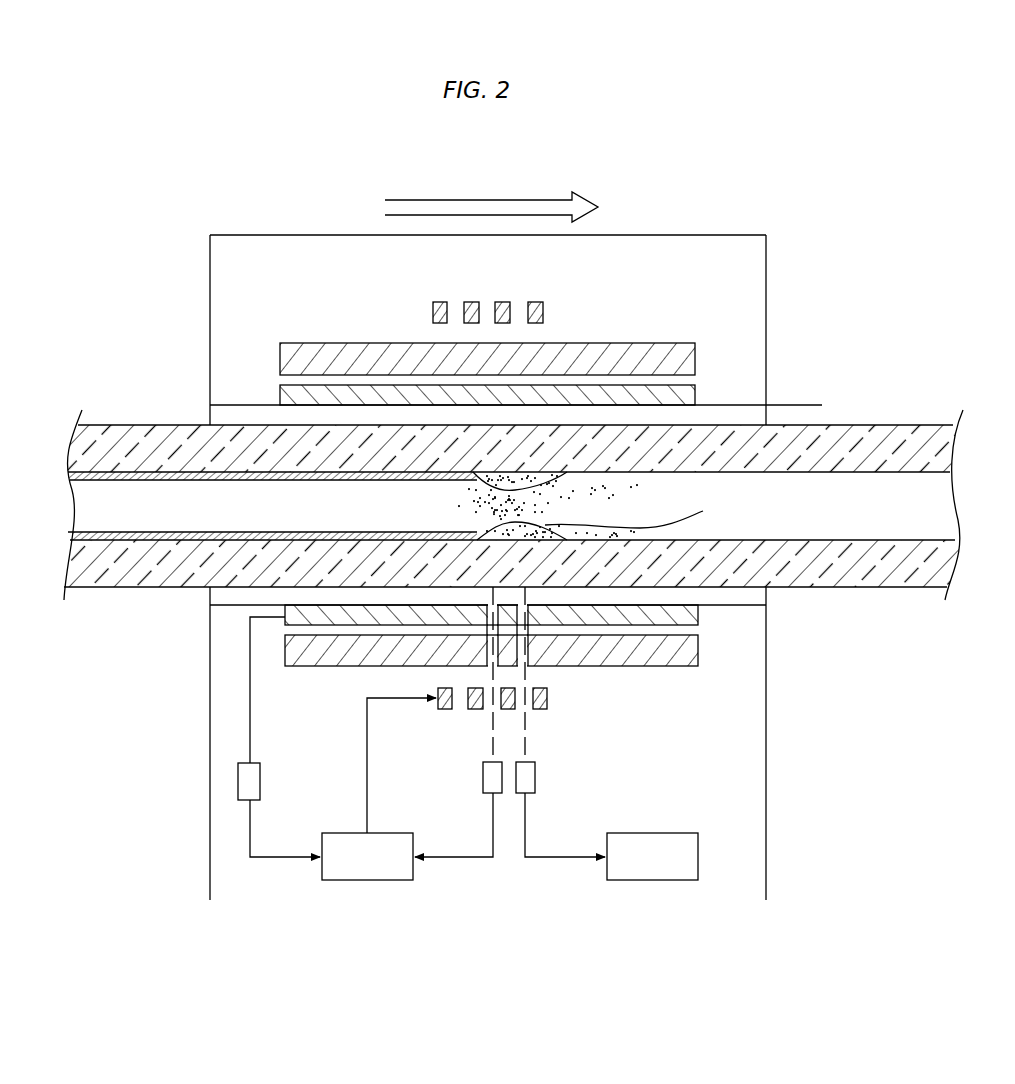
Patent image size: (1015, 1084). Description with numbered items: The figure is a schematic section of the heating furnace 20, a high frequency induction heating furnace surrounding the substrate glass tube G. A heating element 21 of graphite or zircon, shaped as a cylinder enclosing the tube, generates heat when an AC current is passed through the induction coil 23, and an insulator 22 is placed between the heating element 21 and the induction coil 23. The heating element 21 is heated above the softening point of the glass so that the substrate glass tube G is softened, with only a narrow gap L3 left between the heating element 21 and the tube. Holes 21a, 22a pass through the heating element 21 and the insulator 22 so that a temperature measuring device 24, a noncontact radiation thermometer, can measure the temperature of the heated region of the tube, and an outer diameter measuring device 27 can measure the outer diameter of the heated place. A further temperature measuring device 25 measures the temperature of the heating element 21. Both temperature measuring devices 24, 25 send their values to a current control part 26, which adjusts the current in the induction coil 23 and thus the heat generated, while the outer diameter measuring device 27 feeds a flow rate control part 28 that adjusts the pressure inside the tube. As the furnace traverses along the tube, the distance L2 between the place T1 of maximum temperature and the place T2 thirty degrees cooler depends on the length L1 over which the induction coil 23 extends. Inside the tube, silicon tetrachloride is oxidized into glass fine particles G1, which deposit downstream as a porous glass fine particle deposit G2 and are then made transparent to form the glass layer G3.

The heating furnace 20 is at (768, 250).
The heating element 21 is at (692, 393).
The insulator 22 is at (692, 356).
The hole 21a is at (465, 612).
The hole 22a is at (500, 648).
The induction coil 23 is at (545, 310).
The temperature measuring device 24 is at (483, 785).
The temperature measuring device 25 is at (258, 781).
The current control part 26 is at (370, 865).
The outer diameter measuring device 27 is at (535, 782).
The flow rate control part 28 is at (654, 864).
The substrate glass tube G is at (887, 567).
The glass fine particles G1 is at (532, 500).
The porous glass fine particle deposit G2 is at (607, 520).
The glass layer G3 is at (258, 478).
The place of maximum temperature T1 is at (428, 402).
The place of lowered temperature T2 is at (400, 427).
The distance of induction coil L1 is at (543, 295).
The distance between T1 and T2 L2 is at (460, 425).
The gap L3 is at (808, 453).